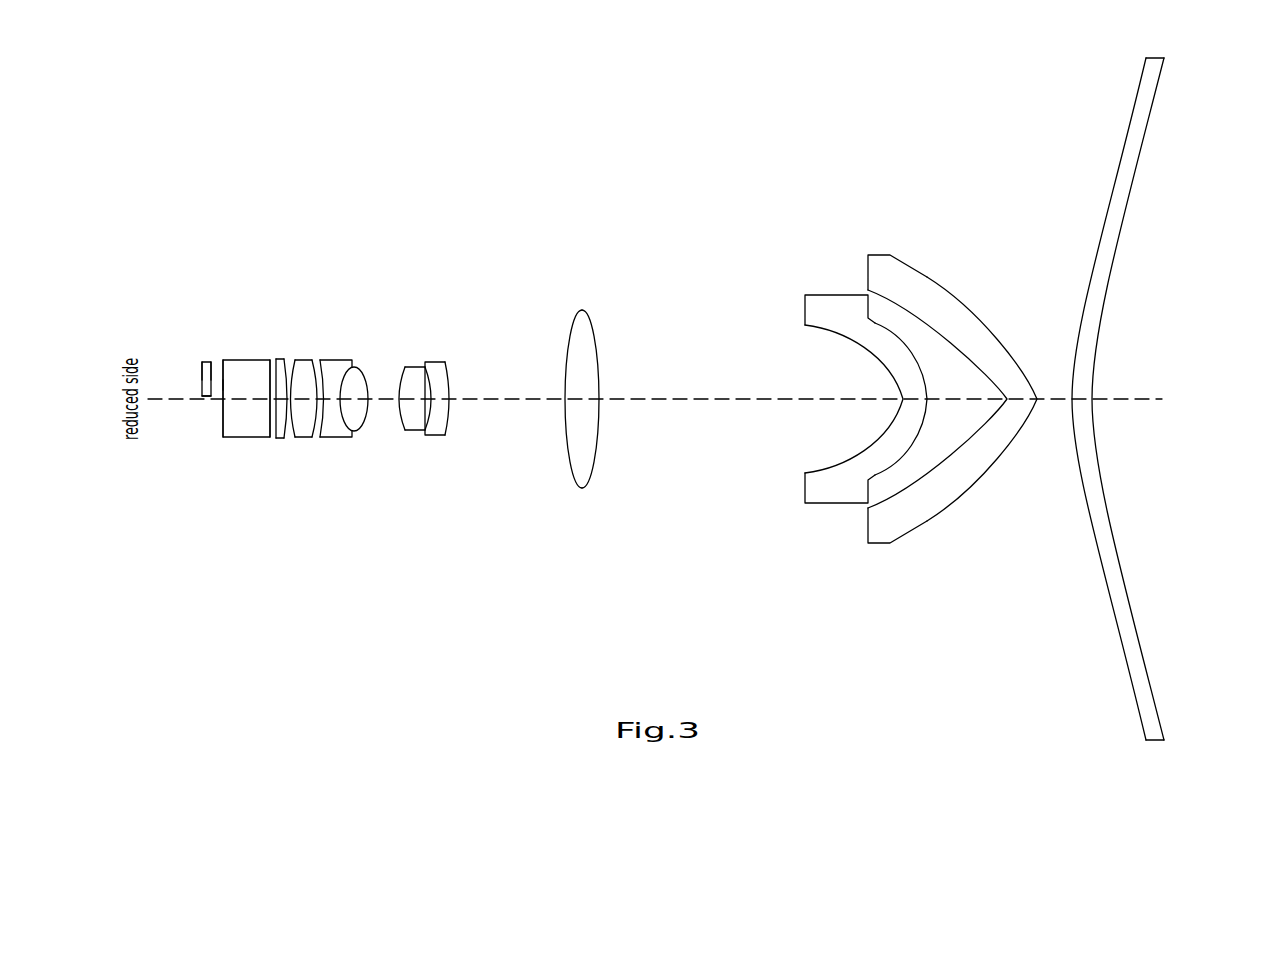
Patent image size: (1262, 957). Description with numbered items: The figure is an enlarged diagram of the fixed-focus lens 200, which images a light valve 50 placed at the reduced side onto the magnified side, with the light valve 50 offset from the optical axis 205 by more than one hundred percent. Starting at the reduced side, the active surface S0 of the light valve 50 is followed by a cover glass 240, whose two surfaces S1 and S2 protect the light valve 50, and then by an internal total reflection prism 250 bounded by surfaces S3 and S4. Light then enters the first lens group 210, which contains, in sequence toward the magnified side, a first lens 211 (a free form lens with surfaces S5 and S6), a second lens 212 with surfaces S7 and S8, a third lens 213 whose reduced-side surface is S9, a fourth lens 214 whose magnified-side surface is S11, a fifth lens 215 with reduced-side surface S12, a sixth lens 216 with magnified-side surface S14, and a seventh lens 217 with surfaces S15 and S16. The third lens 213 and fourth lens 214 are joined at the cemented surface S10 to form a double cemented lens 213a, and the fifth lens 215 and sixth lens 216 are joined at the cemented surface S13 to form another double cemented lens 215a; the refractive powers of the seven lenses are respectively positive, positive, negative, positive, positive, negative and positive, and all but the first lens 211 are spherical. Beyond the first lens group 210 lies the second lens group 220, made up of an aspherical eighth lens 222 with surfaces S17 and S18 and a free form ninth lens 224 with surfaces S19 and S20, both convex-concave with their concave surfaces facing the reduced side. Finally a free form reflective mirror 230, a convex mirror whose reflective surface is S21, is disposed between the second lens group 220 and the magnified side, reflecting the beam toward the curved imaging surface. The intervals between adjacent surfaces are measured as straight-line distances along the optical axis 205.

The light valve 50 is at (199, 392).
The cover glass 240 is at (180, 382).
The internal total reflection prism 250 is at (240, 392).
The fixed-focus lens 200 is at (748, 422).
The optical axis 205 is at (676, 398).
The first lens group 210 is at (441, 431).
The first lens 211 is at (284, 414).
The second lens 212 is at (310, 420).
The third lens 213 is at (336, 415).
The fourth lens 214 is at (359, 440).
The double cemented lens 213a is at (353, 434).
The fifth lens 215 is at (406, 412).
The sixth lens 216 is at (446, 412).
The double cemented lens 215a is at (425, 431).
The seventh lens 217 is at (546, 404).
The second lens group 220 is at (898, 425).
The eighth lens 222 is at (843, 419).
The ninth lens 224 is at (952, 405).
The free form reflective mirror 230 is at (1131, 422).
The surface S0 is at (201, 367).
The surface S1 is at (207, 366).
The surface S2 is at (221, 365).
The surface S3 is at (228, 380).
The surface S4 is at (269, 385).
The surface S5 is at (277, 377).
The surface S6 is at (286, 370).
The surface S7 is at (302, 371).
The surface S8 is at (317, 390).
The surface S9 is at (321, 389).
The surface S10 is at (341, 413).
The surface S11 is at (363, 408).
The surface S12 is at (398, 382).
The surface S13 is at (425, 381).
The surface S14 is at (451, 371).
The surface S15 is at (568, 347).
The surface S16 is at (598, 338).
The surface S17 is at (836, 333).
The surface S18 is at (892, 323).
The surface S19 is at (928, 323).
The surface S20 is at (958, 290).
The surface S21 is at (1112, 200).